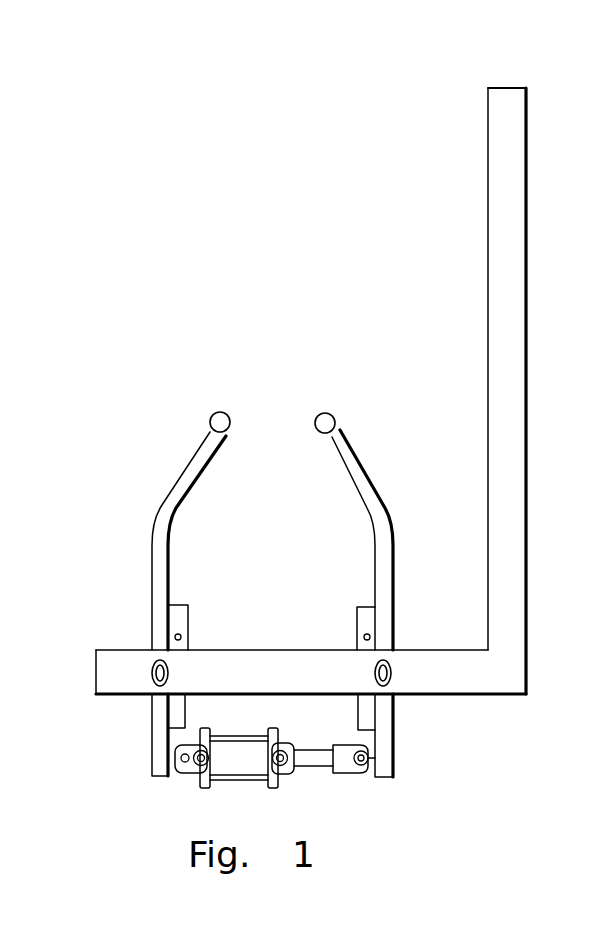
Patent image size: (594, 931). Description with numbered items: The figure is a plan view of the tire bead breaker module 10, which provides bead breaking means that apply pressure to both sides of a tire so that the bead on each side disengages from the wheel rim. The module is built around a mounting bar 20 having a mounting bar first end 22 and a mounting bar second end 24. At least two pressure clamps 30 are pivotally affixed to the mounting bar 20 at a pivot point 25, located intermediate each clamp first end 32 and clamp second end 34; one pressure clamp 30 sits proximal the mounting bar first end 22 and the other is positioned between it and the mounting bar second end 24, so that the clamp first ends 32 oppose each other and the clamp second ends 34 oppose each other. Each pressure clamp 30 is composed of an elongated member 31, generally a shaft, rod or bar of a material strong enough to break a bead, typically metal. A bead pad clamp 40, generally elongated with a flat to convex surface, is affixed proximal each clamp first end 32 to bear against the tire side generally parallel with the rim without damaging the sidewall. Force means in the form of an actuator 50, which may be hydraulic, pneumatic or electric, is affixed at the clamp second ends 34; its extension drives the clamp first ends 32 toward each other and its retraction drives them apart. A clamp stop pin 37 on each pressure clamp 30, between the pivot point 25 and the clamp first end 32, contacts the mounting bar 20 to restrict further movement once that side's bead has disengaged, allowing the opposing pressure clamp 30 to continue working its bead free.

The tire bead breaker module 10 is at (396, 296).
The mounting bar 20 is at (503, 320).
The mounting bar first end 22 is at (105, 673).
The mounting bar second end 24 is at (510, 106).
The pivot point 25 is at (152, 688).
The pressure clamp 30 is at (170, 495).
The elongated member 31 is at (162, 566).
The clamp first end 32 is at (209, 422).
The clamp second end 34 is at (376, 780).
The clamp stop pin 37 is at (182, 636).
The bead pad clamp 40 is at (216, 411).
The actuator 50 is at (280, 785).